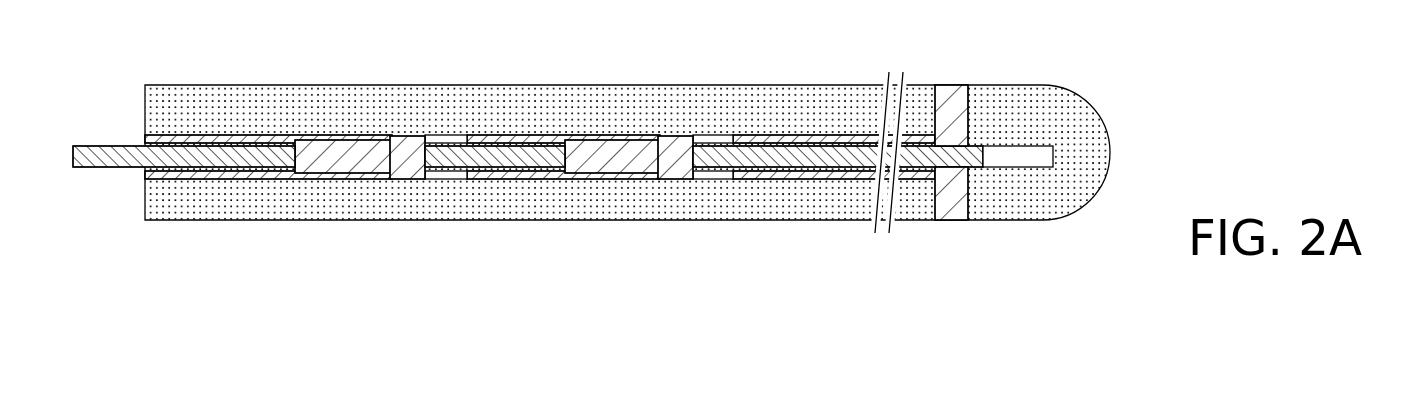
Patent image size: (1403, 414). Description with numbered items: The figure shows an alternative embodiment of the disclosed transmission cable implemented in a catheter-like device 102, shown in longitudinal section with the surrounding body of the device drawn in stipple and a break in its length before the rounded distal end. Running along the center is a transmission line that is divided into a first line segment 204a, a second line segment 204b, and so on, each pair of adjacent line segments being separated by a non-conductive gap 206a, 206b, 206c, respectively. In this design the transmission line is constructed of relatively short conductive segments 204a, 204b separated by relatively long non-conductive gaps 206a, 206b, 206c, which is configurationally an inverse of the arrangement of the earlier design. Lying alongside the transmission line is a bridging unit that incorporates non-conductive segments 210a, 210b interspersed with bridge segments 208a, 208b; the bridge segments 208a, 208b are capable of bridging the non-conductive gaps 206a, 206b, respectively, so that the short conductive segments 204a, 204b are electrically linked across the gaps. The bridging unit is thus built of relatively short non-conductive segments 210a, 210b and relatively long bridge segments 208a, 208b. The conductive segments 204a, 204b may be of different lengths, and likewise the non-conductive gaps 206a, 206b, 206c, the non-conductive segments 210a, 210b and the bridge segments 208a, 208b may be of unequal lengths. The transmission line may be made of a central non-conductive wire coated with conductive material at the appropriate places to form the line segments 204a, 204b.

The catheter-like device 102 is at (182, 212).
The first line segment 204a is at (367, 158).
The second line segment 204b is at (628, 158).
The non-conductive gap 206a is at (196, 158).
The non-conductive gap 206b is at (507, 158).
The non-conductive gap 206c is at (782, 158).
The bridge segment 208a is at (283, 176).
The bridge segment 208b is at (617, 176).
The non-conductive segment 210a is at (427, 176).
The non-conductive segment 210b is at (720, 176).